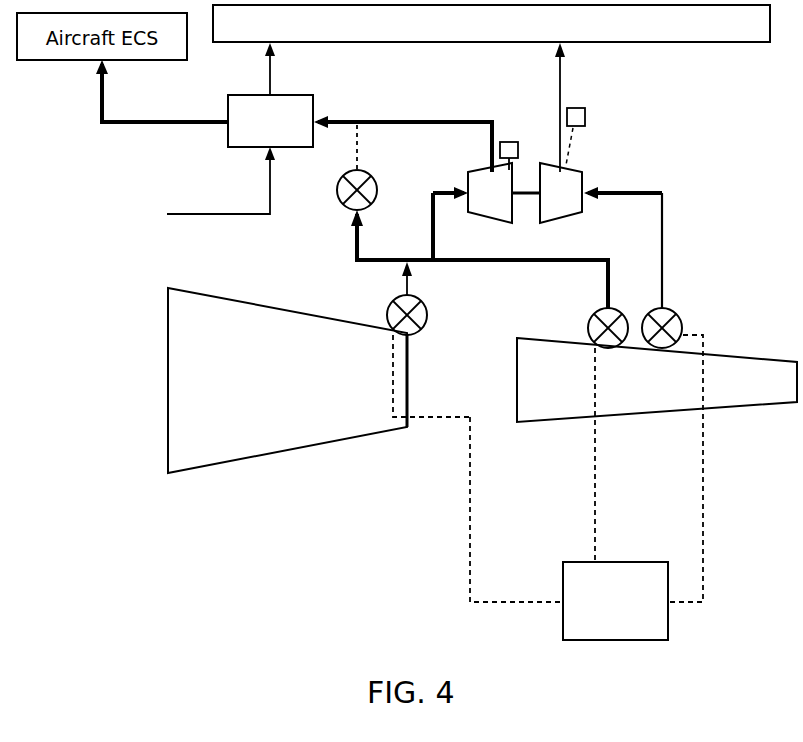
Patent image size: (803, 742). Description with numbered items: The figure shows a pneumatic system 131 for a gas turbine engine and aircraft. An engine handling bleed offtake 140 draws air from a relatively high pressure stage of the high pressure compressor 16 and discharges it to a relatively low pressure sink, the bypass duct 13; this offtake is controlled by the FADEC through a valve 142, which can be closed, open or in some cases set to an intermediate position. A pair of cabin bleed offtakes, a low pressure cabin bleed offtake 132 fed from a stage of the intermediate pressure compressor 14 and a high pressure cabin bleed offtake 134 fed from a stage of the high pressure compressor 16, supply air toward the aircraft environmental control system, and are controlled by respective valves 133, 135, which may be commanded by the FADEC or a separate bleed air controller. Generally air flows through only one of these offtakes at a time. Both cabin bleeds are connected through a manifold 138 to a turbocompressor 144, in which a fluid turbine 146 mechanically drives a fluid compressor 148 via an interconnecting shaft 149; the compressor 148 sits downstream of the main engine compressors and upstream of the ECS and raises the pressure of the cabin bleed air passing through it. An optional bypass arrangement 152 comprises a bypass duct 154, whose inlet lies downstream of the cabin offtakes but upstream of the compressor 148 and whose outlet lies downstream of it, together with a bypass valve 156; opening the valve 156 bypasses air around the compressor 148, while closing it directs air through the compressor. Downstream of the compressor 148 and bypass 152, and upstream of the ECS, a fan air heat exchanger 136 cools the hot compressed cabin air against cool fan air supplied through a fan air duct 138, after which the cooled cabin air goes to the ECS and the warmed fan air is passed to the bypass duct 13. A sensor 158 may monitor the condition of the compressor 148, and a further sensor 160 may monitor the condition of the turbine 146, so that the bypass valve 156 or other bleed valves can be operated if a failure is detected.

The bypass duct 13 is at (648, 35).
The intermediate pressure compressor 14 is at (280, 453).
The high pressure compressor 16 is at (636, 418).
The pneumatic system 131 is at (422, 516).
The low pressure cabin bleed offtake 132 is at (381, 300).
The valve 133 is at (422, 333).
The high pressure cabin bleed offtake 134 is at (585, 309).
The valve 135 is at (613, 303).
The fan air heat exchanger 136 is at (226, 141).
The manifold / fan air duct 138 is at (210, 217).
The engine handling bleed offtake 140 is at (679, 258).
The valve 142 is at (685, 325).
The turbocompressor 144 is at (540, 136).
The fluid turbine 146 is at (588, 175).
The fluid compressor 148 is at (467, 173).
The interconnecting shaft 149 is at (520, 198).
The bypass arrangement 152 is at (310, 217).
The bypass duct 154 is at (358, 132).
The bypass valve 156 is at (339, 186).
The sensor 158 is at (490, 118).
The sensor 160 is at (588, 112).